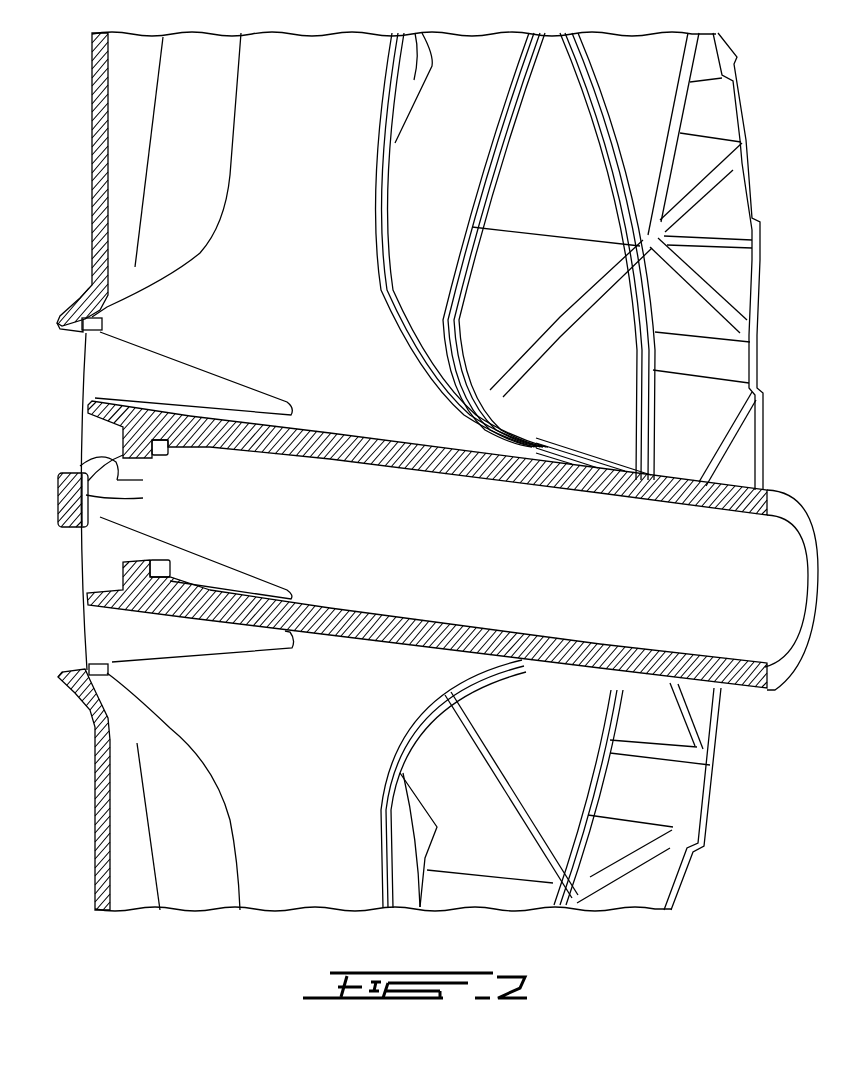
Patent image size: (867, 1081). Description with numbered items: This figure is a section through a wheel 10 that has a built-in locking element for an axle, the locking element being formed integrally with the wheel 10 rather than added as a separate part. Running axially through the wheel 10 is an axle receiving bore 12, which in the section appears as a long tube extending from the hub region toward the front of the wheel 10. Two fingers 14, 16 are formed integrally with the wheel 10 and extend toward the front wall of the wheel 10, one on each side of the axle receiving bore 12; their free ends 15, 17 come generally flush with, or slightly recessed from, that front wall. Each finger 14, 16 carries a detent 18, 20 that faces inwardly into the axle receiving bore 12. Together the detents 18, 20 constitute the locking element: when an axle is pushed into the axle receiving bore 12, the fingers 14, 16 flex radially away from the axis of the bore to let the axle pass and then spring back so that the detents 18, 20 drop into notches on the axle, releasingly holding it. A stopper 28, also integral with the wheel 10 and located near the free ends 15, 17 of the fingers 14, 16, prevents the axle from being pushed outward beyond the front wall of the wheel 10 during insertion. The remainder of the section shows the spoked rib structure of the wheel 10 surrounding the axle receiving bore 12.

The wheel 10 is at (322, 148).
The axle receiving bore 12 is at (420, 552).
The finger 14 is at (452, 640).
The finger 16 is at (532, 472).
The free end 17 is at (90, 412).
The free end 15 is at (88, 597).
The detent 18 is at (152, 457).
The detent 20 is at (150, 556).
The stopper 28 is at (51, 482).